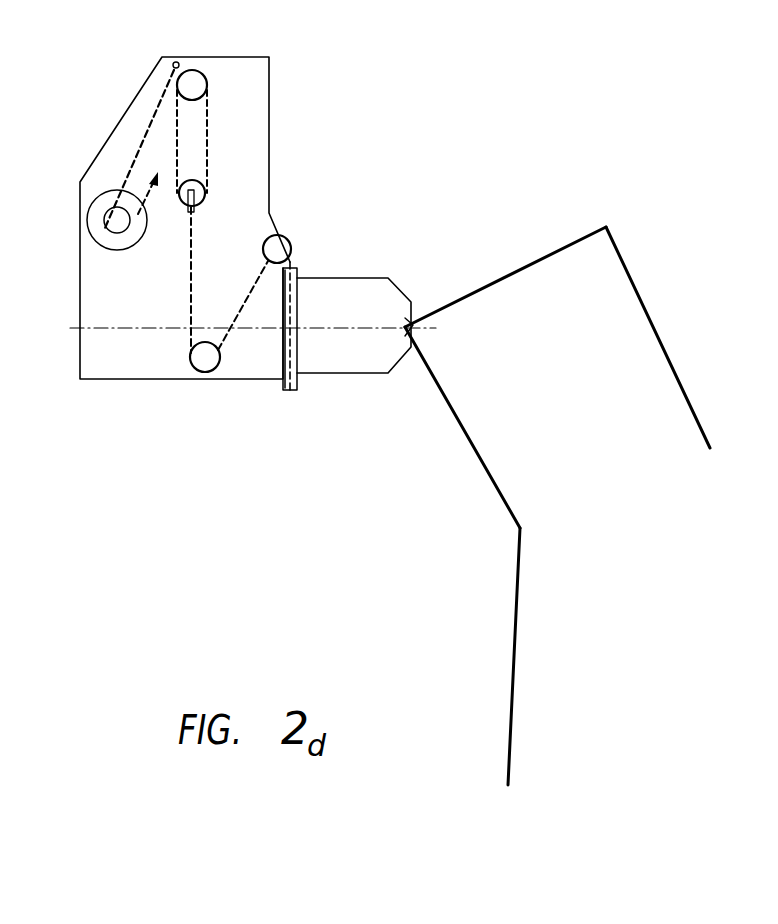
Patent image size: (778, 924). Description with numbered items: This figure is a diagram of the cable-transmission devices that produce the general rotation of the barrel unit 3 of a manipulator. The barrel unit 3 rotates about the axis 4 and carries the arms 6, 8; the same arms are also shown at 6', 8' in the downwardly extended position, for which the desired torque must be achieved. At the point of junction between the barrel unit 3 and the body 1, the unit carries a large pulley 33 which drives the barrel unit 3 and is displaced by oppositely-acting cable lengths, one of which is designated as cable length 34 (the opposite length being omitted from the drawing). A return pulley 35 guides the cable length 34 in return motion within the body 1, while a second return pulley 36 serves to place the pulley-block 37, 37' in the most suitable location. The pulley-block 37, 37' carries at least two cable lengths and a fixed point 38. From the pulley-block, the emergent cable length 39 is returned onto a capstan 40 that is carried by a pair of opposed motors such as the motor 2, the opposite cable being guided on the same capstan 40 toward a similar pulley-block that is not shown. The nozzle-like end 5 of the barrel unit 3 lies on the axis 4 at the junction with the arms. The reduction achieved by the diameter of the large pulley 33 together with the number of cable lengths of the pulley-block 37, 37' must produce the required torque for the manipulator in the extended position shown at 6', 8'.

The body 1 is at (102, 360).
The motor 2 is at (92, 208).
The barrel unit 3 is at (360, 358).
The axis 4 is at (96, 326).
The nozzle outlet 5 is at (413, 306).
The arm 6 is at (505, 266).
The arm in downwardly extended position 6' is at (462, 427).
The arm 8 is at (658, 326).
The arm in downwardly extended position 8' is at (542, 656).
The large pulley 33 is at (283, 390).
The cable length 34 is at (244, 290).
The return pulley 35 is at (290, 250).
The second return pulley 36 is at (198, 358).
The pulley-block 37 is at (245, 185).
The pulley-block 37' is at (247, 104).
The fixed point 38 is at (172, 62).
The emergent cable length 39 is at (143, 130).
The capstan 40 is at (103, 242).